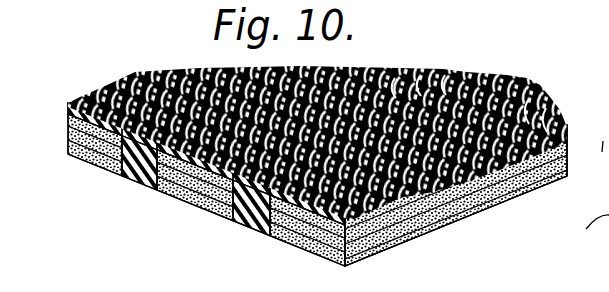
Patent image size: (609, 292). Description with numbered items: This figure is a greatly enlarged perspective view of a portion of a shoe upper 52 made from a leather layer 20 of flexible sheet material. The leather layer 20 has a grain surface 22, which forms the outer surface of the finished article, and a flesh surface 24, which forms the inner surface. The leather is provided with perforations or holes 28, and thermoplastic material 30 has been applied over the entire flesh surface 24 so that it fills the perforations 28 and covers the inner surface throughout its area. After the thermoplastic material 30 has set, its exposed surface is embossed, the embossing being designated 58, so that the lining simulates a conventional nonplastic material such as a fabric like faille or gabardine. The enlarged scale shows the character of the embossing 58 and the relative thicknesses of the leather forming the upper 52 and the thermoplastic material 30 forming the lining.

The leather layer 20 is at (70, 124).
The grain surface 22 is at (183, 209).
The flesh surface 24 is at (531, 101).
The perforations 28 is at (113, 157).
The thermoplastic material 30 is at (87, 97).
The upper 52 is at (568, 143).
The embossing 58 is at (414, 84).